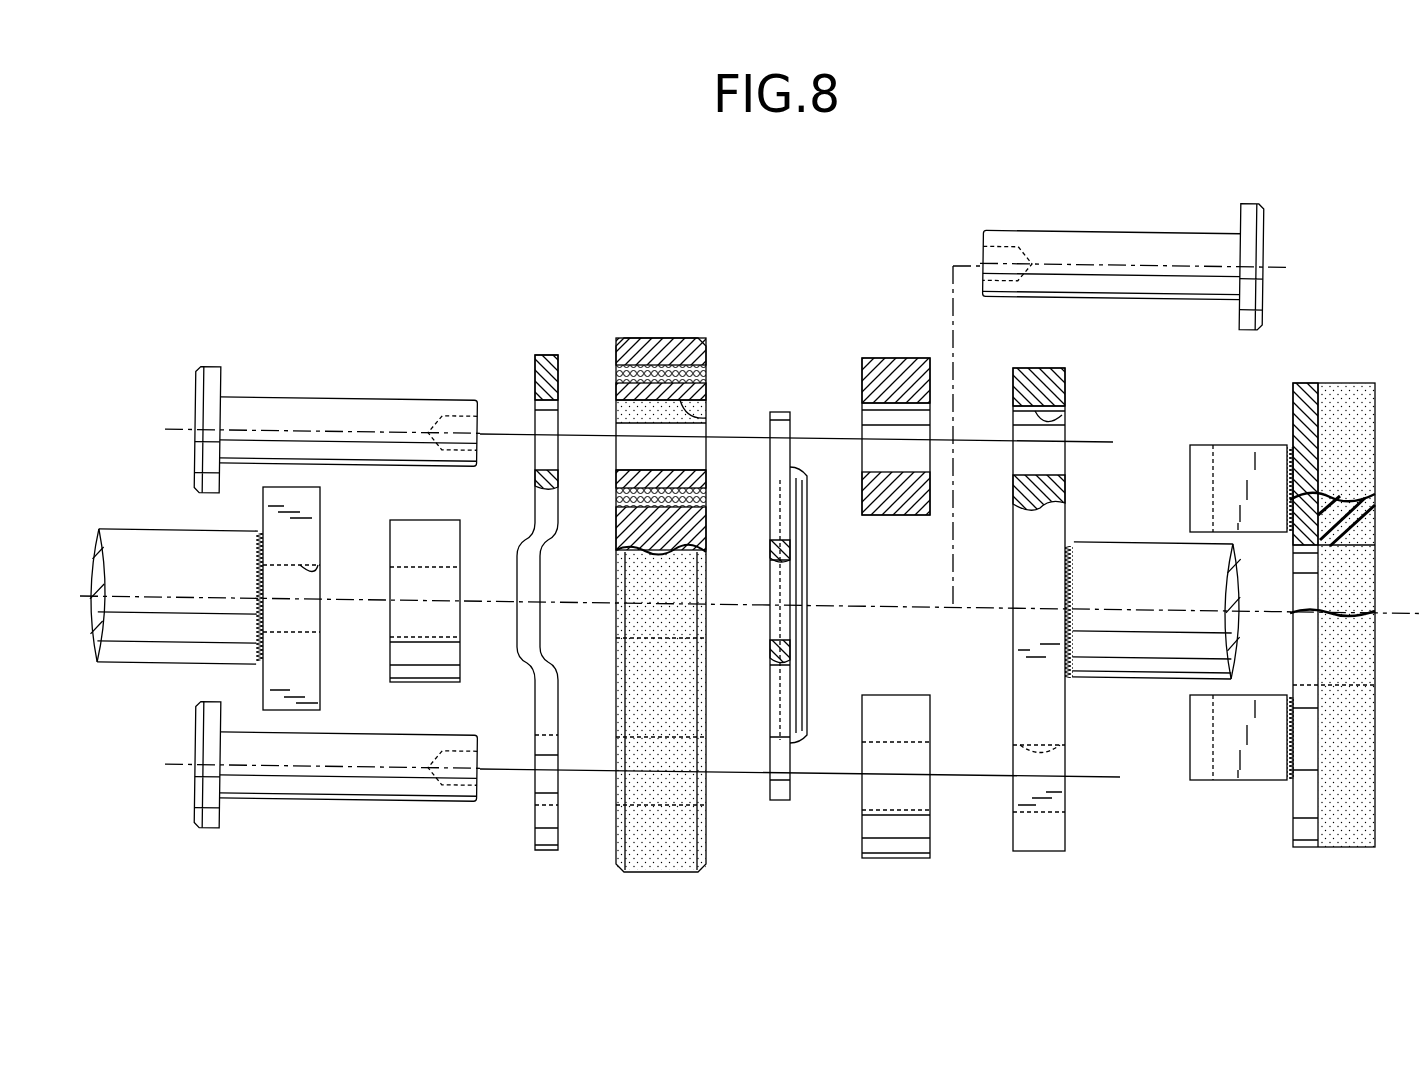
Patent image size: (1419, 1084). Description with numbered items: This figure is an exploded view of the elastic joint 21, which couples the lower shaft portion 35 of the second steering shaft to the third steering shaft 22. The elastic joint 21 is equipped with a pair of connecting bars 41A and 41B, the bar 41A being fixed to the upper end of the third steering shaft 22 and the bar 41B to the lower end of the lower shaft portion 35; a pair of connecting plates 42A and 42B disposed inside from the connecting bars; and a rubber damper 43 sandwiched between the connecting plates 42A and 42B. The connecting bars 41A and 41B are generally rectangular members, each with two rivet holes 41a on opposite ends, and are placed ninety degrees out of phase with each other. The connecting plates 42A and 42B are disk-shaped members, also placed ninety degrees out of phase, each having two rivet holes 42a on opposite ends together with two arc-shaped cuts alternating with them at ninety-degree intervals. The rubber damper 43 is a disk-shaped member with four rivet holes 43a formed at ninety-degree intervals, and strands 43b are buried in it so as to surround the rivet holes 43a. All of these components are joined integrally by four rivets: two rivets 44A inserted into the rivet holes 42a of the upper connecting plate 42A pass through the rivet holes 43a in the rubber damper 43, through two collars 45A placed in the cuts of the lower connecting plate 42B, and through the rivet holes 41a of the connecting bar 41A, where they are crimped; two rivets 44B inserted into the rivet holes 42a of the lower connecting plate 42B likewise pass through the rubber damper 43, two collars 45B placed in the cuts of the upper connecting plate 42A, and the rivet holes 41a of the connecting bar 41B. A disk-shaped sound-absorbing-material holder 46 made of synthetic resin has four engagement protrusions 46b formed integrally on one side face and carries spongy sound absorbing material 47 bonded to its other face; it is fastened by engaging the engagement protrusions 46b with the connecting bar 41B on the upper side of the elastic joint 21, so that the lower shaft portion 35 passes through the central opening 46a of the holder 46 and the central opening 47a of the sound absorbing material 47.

The elastic joint 21 is at (810, 268).
The third steering shaft 22 is at (171, 538).
The lower shaft portion 35 is at (1116, 562).
The connecting bar 41A is at (324, 644).
The connecting bar 41B is at (1067, 379).
The rivet holes 41a is at (312, 575).
The connecting plate 42A is at (783, 410).
The connecting plate 42B is at (547, 353).
The rivet holes 42a is at (535, 416).
The rubber damper 43 is at (687, 337).
The rivet holes 43a is at (682, 421).
The strands 43b is at (672, 375).
The rivets 44A is at (1082, 250).
The rivets 44B is at (302, 407).
The collars 45A is at (416, 524).
The collars 45B is at (900, 358).
The sound-absorbing-material holder 46 is at (1306, 382).
The opening 46a is at (1298, 560).
The engagement protrusions 46b is at (1230, 455).
The sound absorbing material 47 is at (1357, 382).
The opening 47a is at (1360, 576).